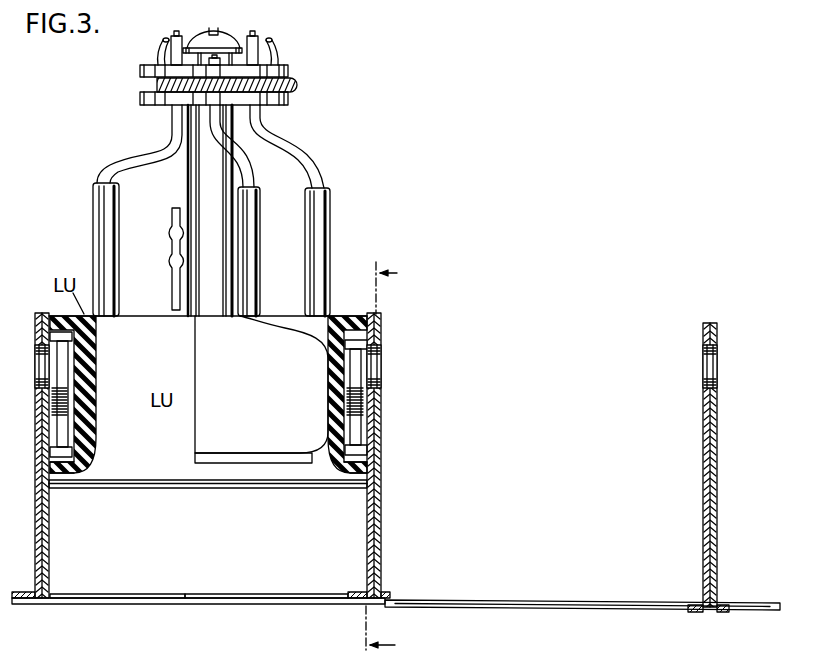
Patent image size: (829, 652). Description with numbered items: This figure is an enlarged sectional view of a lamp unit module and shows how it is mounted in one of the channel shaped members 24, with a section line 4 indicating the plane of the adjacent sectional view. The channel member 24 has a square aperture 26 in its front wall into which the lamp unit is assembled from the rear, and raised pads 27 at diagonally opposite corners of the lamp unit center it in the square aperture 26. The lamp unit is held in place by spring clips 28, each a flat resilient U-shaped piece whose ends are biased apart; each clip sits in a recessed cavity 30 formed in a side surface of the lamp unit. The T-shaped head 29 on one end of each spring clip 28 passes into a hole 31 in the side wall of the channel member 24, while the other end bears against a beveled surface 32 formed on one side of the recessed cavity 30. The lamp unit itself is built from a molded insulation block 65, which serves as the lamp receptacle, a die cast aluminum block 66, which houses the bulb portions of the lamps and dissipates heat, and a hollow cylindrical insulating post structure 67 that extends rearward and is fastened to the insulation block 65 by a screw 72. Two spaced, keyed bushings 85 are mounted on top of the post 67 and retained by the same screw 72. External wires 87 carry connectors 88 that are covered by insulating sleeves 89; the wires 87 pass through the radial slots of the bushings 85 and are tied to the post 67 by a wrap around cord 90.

The section line 4- 4 is at (381, 447).
The channel shaped member 24 is at (38, 566).
The square aperture 26 is at (348, 600).
The raised pad 27 is at (170, 600).
The spring clip 28 is at (55, 362).
The T-shaped head 29 is at (50, 339).
The recessed cavity 30 is at (348, 316).
The hole 31 is at (34, 362).
The beveled surface 32 is at (50, 460).
The molded insulation block 65 is at (163, 477).
The die cast aluminum block 66 is at (287, 585).
The post structure 67 is at (223, 173).
The screw 72 is at (224, 40).
The bushing 85 is at (140, 97).
The external wire 87 is at (172, 38).
The connector 88 is at (173, 253).
The insulating sleeve 89 is at (93, 222).
The wrap around cord 90 is at (298, 86).